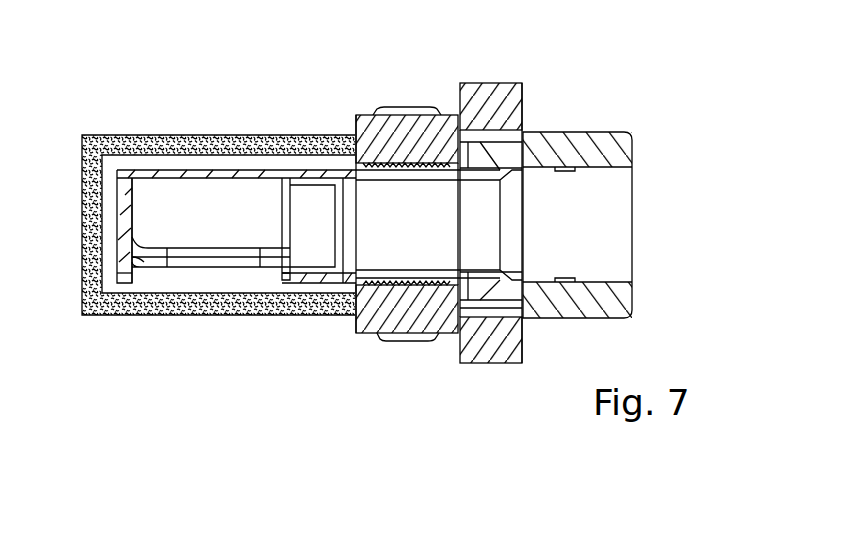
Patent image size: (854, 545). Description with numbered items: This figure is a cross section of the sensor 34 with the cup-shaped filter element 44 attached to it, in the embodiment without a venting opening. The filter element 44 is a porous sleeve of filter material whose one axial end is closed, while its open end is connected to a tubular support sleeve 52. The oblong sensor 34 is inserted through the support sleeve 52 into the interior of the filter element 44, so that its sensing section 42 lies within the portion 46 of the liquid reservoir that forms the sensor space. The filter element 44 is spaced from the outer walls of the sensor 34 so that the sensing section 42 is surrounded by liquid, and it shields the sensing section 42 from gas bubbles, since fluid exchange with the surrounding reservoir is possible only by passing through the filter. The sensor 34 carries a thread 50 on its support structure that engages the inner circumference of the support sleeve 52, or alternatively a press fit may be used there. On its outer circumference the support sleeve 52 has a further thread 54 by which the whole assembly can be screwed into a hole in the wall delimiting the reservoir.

The sensor 34 is at (597, 150).
The sensing section 42 is at (215, 210).
The filter element 44 is at (229, 302).
The portion of the liquid reservoir 46 is at (158, 280).
The thread 50 is at (399, 167).
The support sleeve 52 is at (437, 113).
The further thread 54 is at (415, 337).